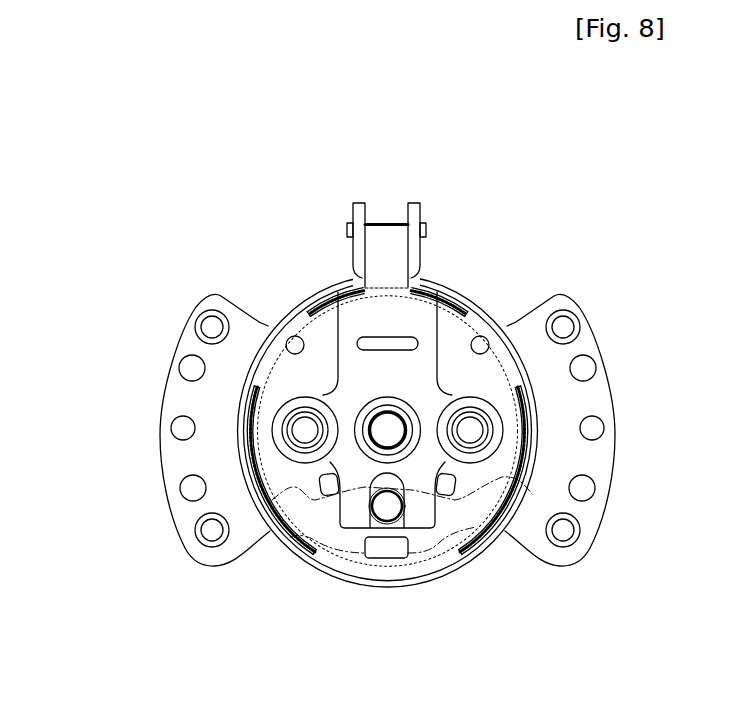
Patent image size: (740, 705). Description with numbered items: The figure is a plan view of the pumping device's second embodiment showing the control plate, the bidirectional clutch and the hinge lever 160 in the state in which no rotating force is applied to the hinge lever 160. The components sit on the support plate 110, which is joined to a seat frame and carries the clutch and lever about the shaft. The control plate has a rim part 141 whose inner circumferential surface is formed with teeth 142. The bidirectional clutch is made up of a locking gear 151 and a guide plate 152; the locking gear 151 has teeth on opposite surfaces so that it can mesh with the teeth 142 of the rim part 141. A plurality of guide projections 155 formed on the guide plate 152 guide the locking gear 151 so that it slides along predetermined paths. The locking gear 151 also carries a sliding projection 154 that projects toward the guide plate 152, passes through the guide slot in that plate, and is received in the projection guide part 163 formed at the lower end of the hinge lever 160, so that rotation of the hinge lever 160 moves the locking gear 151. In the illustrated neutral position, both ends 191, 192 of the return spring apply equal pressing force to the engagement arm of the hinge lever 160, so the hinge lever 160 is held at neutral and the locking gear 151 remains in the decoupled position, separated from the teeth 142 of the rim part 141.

The support plate 110 is at (555, 303).
The rim part 141 is at (245, 443).
The teeth 142 is at (248, 410).
The locking gear 151 is at (455, 553).
The guide plate 152 is at (447, 337).
The sliding projection 154 is at (387, 510).
The guide projections 155 is at (455, 479).
The hinge lever 160 is at (365, 322).
The projection guide part 163 is at (350, 515).
The end of return spring 191 is at (357, 200).
The end of return spring 192 is at (415, 201).